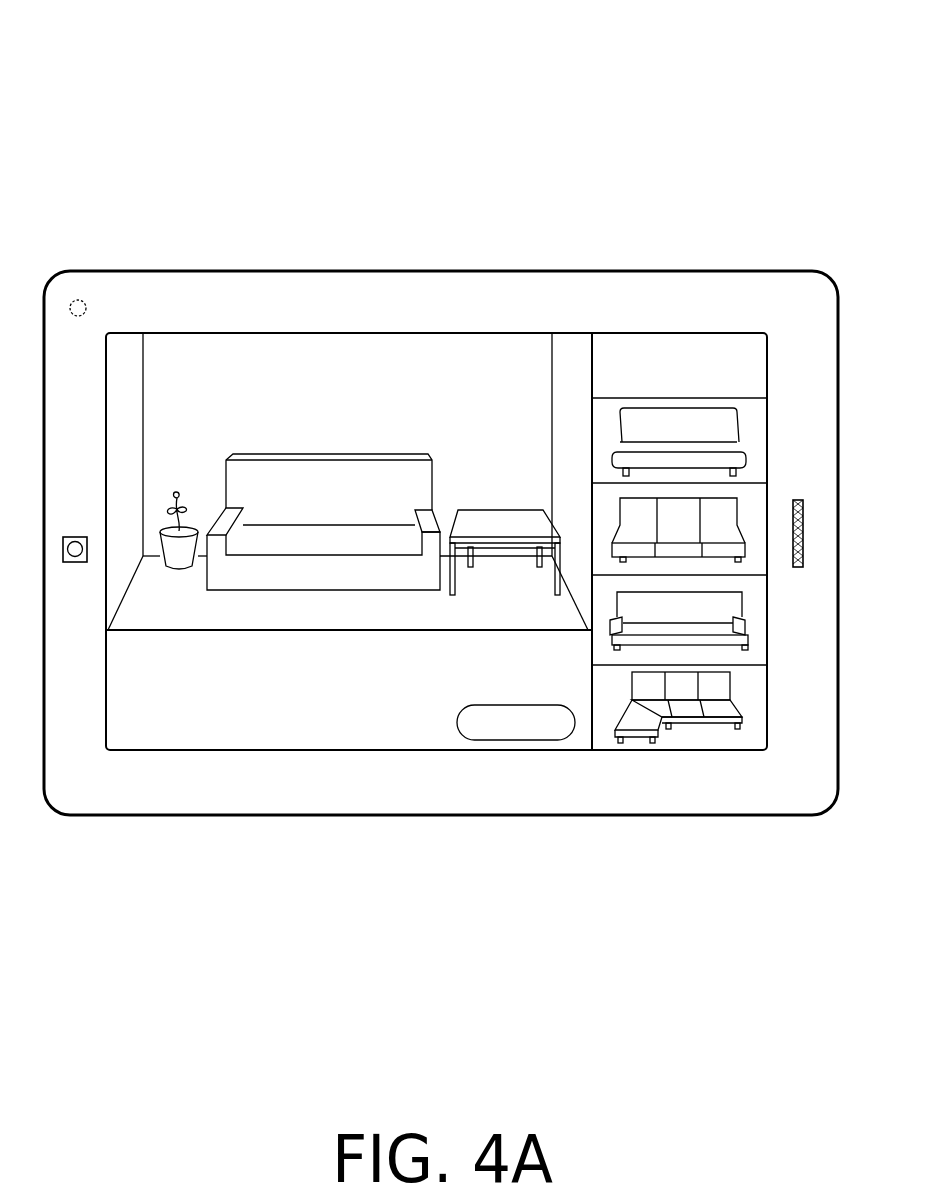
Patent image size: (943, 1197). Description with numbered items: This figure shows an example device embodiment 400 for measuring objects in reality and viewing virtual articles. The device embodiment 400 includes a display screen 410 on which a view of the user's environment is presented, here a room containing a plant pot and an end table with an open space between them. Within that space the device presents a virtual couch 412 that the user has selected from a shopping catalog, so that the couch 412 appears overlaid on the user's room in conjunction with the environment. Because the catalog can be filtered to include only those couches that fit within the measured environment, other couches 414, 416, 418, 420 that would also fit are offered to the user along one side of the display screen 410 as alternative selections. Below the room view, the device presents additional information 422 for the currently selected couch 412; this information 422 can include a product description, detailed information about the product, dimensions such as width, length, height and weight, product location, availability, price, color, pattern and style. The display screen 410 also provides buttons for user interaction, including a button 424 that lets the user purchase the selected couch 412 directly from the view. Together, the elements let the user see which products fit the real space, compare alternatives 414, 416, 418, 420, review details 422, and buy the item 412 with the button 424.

The device embodiment 400 is at (57, 88).
The display screen 410 is at (768, 333).
The couch 412 is at (326, 454).
The other couch 414 is at (738, 423).
The other couch 416 is at (738, 508).
The other couch 418 is at (742, 612).
The other couch 420 is at (733, 695).
The additional information 422 is at (173, 713).
The button 424 is at (515, 740).